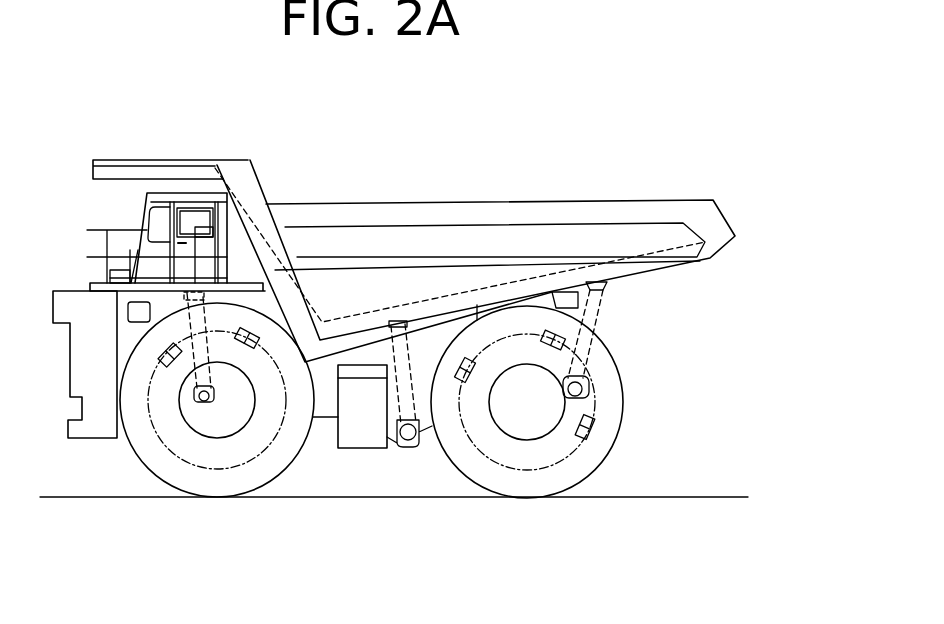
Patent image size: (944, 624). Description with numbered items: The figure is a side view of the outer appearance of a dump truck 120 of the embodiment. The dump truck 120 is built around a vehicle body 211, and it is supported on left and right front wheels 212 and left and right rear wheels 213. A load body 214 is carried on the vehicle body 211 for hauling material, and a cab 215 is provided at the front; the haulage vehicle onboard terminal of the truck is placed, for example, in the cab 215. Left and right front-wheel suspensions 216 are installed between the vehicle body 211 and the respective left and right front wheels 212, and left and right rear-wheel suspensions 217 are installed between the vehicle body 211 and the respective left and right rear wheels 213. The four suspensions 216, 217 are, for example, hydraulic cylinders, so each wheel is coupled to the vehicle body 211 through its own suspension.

The dump truck 120 is at (552, 88).
The vehicle body 211 is at (282, 312).
The front wheels 212 is at (223, 487).
The rear wheels 213 is at (530, 483).
The load body 214 is at (613, 207).
The cab 215 is at (183, 207).
The front-wheel suspensions 216 is at (197, 333).
The rear-wheel suspensions 217 is at (588, 317).